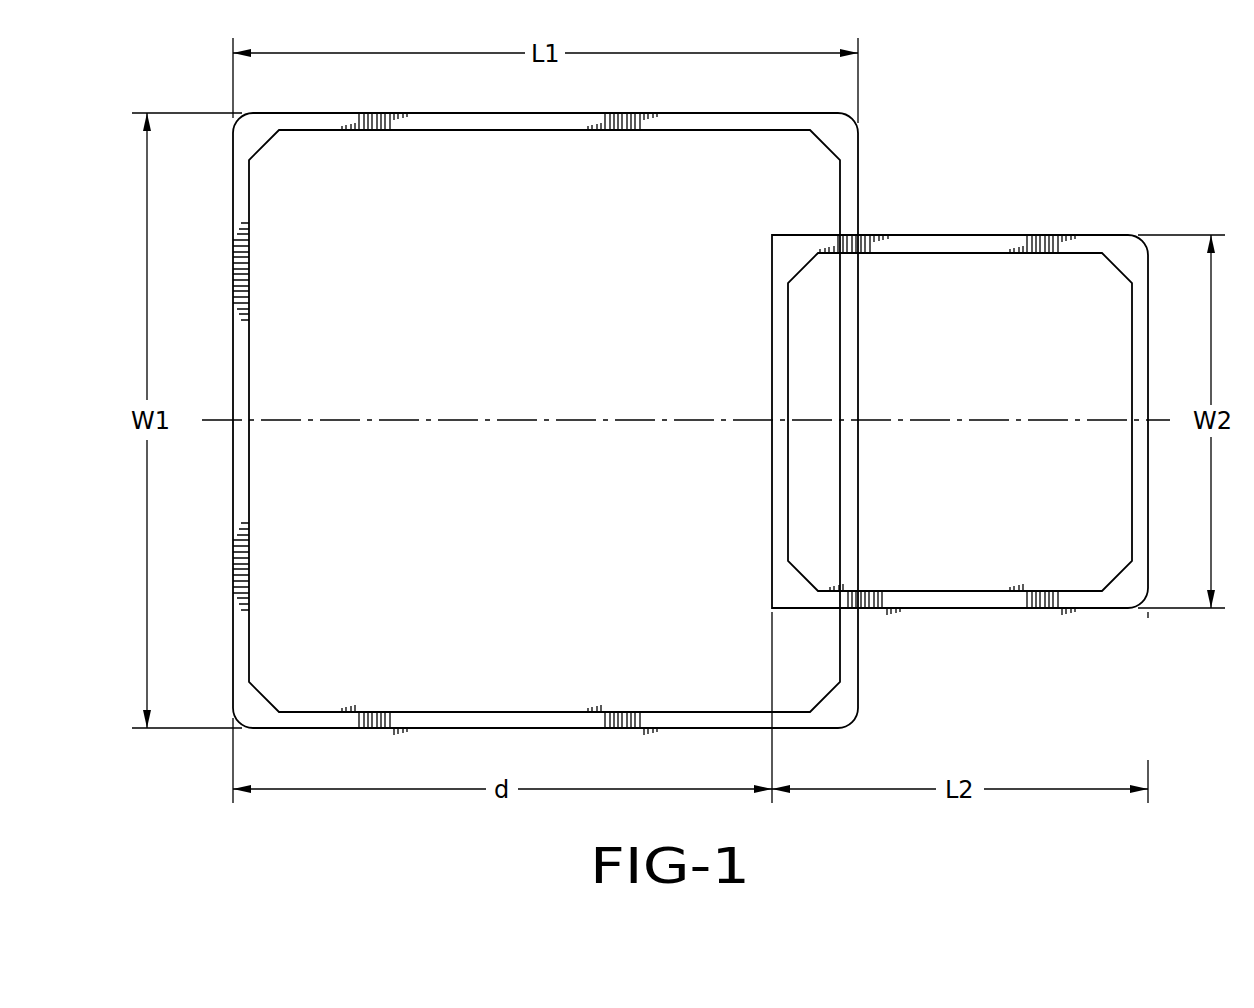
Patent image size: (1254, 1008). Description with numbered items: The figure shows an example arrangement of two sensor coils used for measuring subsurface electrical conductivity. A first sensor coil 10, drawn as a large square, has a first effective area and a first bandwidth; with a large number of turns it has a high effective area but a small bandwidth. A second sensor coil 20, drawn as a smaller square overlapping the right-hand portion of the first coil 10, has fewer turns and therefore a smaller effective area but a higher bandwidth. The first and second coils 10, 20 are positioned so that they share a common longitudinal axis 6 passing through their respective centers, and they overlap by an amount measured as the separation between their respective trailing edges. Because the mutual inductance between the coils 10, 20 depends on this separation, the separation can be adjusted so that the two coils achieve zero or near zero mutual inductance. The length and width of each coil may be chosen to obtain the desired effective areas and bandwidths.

The first sensor coil 10 is at (487, 130).
The second sensor coil 20 is at (772, 270).
The common longitudinal axis 6 is at (512, 420).